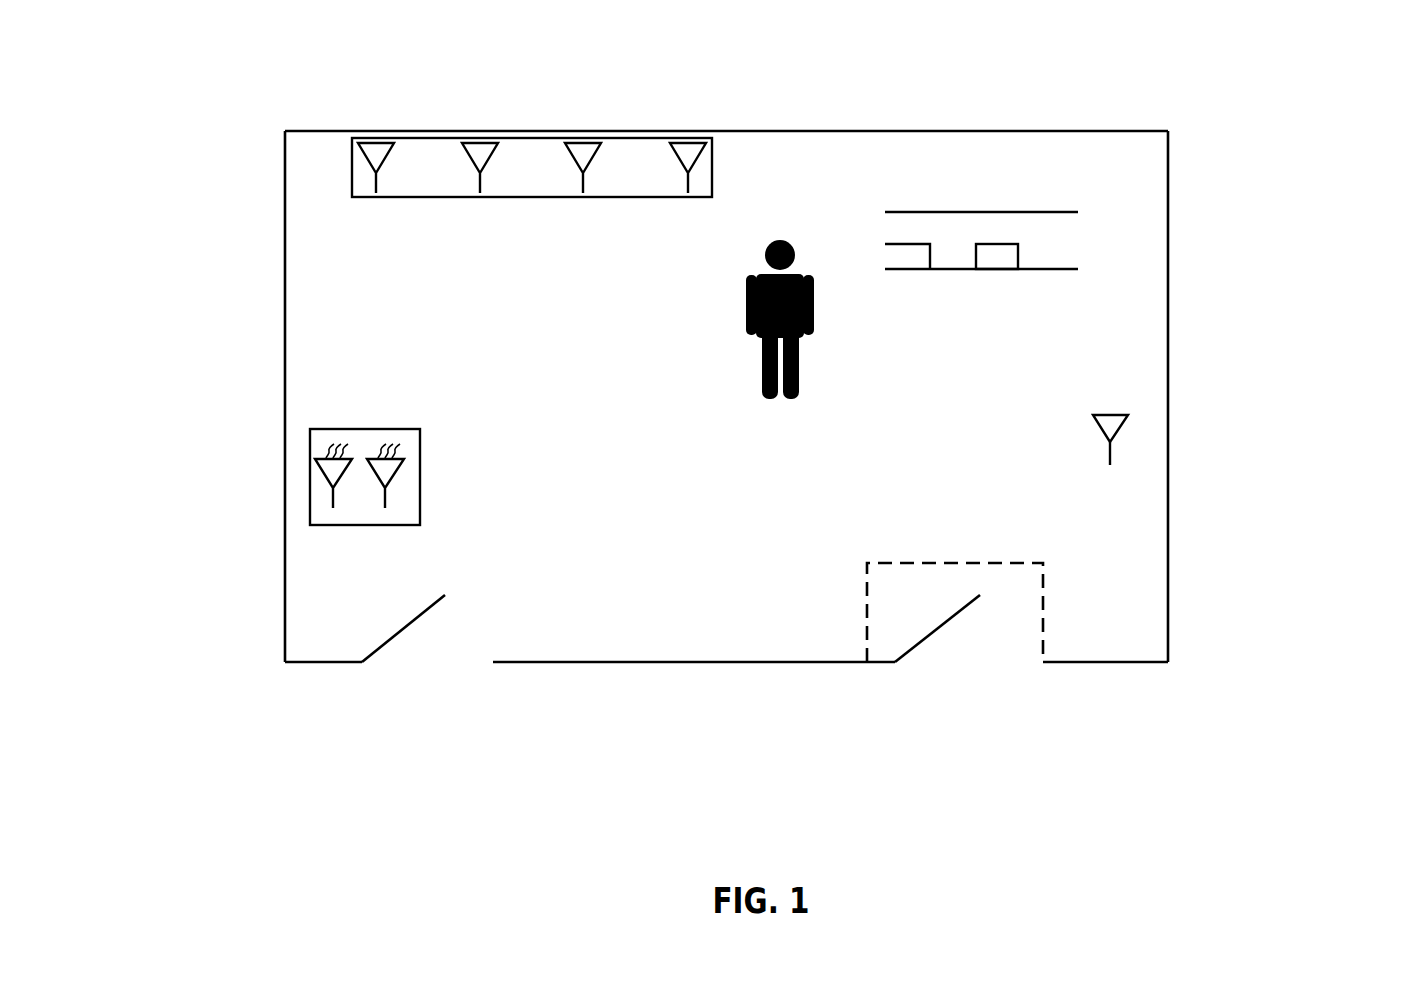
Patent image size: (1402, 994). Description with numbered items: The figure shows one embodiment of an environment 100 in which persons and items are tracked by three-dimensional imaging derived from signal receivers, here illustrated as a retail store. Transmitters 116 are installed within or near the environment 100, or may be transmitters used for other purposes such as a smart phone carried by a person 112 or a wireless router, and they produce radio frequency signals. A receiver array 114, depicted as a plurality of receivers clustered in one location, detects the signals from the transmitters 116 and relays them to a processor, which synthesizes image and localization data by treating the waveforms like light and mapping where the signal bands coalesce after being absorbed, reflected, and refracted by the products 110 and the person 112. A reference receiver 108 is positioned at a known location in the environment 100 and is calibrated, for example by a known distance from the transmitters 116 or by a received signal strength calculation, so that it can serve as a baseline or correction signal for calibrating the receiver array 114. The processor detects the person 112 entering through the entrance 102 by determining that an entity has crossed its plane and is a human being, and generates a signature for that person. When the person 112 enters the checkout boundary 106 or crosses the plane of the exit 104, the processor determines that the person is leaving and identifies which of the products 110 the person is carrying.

The environment 100 is at (303, 68).
The entrance 102 is at (422, 669).
The exit 104 is at (937, 672).
The checkout boundary 106 is at (1044, 622).
The reference receiver 108 is at (1125, 447).
The products 110 is at (1000, 233).
The person 112 is at (823, 347).
The receiver array 114 is at (613, 137).
The transmitters 116 is at (313, 458).